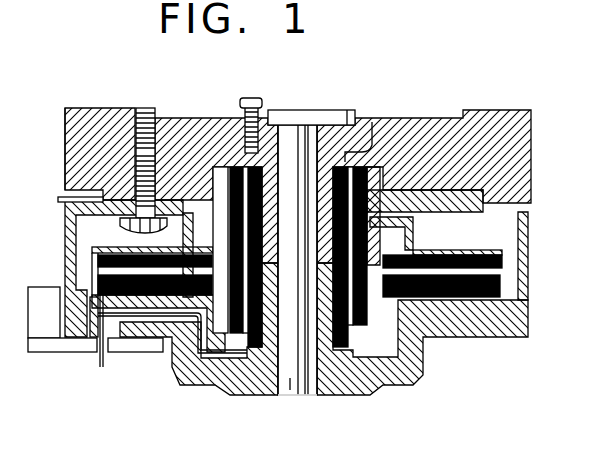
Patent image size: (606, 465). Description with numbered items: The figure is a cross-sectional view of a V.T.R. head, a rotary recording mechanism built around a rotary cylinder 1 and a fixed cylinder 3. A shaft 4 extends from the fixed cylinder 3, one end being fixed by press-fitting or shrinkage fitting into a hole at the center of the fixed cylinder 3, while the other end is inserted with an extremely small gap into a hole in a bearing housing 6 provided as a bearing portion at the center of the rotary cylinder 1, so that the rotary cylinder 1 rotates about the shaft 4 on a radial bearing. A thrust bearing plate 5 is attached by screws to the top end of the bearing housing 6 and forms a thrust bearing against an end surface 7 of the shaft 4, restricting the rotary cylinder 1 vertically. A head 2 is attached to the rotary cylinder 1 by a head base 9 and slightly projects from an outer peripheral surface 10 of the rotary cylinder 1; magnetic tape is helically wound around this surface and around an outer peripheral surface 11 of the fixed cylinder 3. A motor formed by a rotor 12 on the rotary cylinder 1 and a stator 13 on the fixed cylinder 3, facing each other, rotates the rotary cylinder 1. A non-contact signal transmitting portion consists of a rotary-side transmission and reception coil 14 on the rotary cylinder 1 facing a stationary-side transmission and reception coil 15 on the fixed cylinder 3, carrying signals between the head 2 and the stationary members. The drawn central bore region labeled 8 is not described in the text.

The rotary cylinder 1 is at (105, 121).
The head 2 is at (60, 198).
The fixed cylinder 3 is at (185, 363).
The shaft 4 is at (292, 380).
The thrust bearing plate 5 is at (327, 116).
The bearing housing 6 is at (372, 122).
The end surface 7 is at (302, 124).
The bearing sleeve 8 is at (288, 143).
The head base 9 is at (87, 218).
The outer peripheral surface 10 is at (65, 139).
The outer peripheral surface 11 is at (65, 265).
The rotor 12 is at (502, 262).
The stator 13 is at (497, 283).
The rotary-side transmission and reception coil 14 is at (362, 332).
The stationary-side transmission and reception coil 15 is at (347, 352).